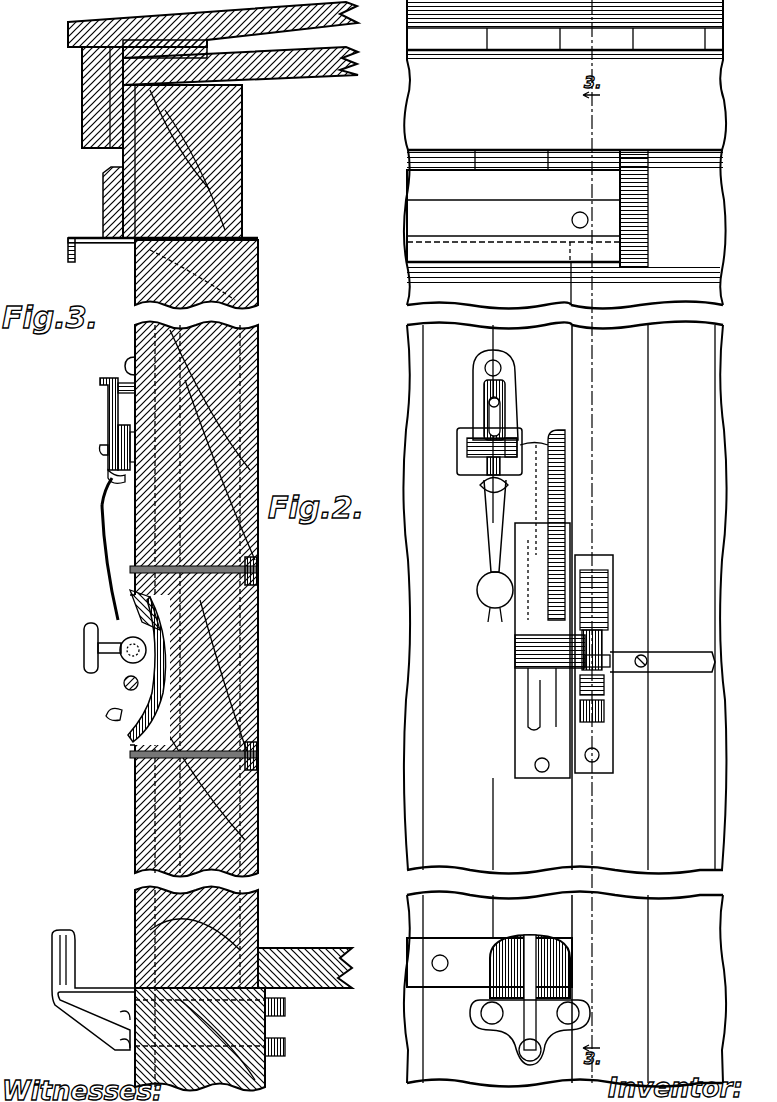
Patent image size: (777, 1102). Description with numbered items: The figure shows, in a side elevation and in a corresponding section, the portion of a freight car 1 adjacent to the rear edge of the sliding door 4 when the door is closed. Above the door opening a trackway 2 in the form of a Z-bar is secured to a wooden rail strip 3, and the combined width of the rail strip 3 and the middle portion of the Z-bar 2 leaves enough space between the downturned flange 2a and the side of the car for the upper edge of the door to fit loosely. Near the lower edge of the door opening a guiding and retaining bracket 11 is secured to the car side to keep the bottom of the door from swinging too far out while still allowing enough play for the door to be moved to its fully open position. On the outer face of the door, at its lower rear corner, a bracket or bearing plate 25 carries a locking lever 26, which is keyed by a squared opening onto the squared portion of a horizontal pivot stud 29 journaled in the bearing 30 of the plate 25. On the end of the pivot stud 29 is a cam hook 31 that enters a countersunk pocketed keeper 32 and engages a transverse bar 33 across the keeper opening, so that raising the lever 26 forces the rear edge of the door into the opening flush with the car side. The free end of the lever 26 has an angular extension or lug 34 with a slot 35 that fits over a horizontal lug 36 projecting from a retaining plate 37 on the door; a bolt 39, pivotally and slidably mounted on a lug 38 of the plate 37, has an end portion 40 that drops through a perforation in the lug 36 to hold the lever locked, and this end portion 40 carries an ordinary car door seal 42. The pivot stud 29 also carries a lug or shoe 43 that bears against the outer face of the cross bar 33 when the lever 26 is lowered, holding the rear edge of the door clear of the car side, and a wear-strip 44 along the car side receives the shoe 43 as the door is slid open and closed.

In FIG. 3, the freight car 1 is at (238, 862).
In FIG. 2, the freight car 1 is at (666, 806).
In FIG. 3, the trackway 2 is at (88, 227).
In FIG. 2, the trackway 2 is at (440, 232).
In FIG. 3, the downturned flange 2a is at (68, 249).
In FIG. 2, the downturned flange 2a is at (468, 255).
In FIG. 3, the wooden rail strip 3 is at (118, 187).
In FIG. 2, the wooden rail strip 3 is at (605, 190).
In FIG. 2, the door 4 is at (489, 597).
In FIG. 3, the guiding and retaining brackets 11 is at (58, 945).
In FIG. 2, the guiding and retaining brackets 11 is at (545, 975).
In FIG. 2, the bracket or bearing plate 25 is at (540, 743).
In FIG. 3, the locking lever 26 is at (110, 535).
In FIG. 2, the locking lever 26 is at (537, 568).
In FIG. 3, the horizontal pivot stud 29 is at (138, 652).
In FIG. 2, the horizontal pivot stud 29 is at (582, 650).
In FIG. 2, the bearing 30 is at (518, 656).
In FIG. 3, the cam hook 31 is at (115, 712).
In FIG. 2, the cam hook 31 is at (605, 712).
In FIG. 3, the countersunk pocketed keeper 32 is at (146, 605).
In FIG. 2, the countersunk pocketed keeper 32 is at (592, 625).
In FIG. 3, the transverse bar 33 is at (124, 684).
In FIG. 2, the transverse bar 33 is at (605, 690).
In FIG. 3, the angular extension or lug 34 is at (118, 433).
In FIG. 2, the angular extension or lug 34 is at (462, 440).
In FIG. 2, the slot 35 is at (488, 466).
In FIG. 3, the horizontal lug 36 is at (103, 450).
In FIG. 2, the horizontal lug 36 is at (508, 446).
In FIG. 3, the retaining plate 37 is at (110, 488).
In FIG. 2, the retaining plate 37 is at (480, 385).
In FIG. 3, the lug 38 is at (125, 368).
In FIG. 3, the bolt 39 is at (110, 415).
In FIG. 2, the bolt 39 is at (505, 412).
In FIG. 3, the end portion of the bolt 40 is at (115, 478).
In FIG. 2, the end portion of the bolt 40 is at (486, 480).
In FIG. 2, the car door seal 42 is at (490, 592).
In FIG. 3, the lug or shoe 43 is at (90, 652).
In FIG. 2, the lug or shoe 43 is at (600, 660).
In FIG. 2, the wear-strip 44 is at (700, 660).